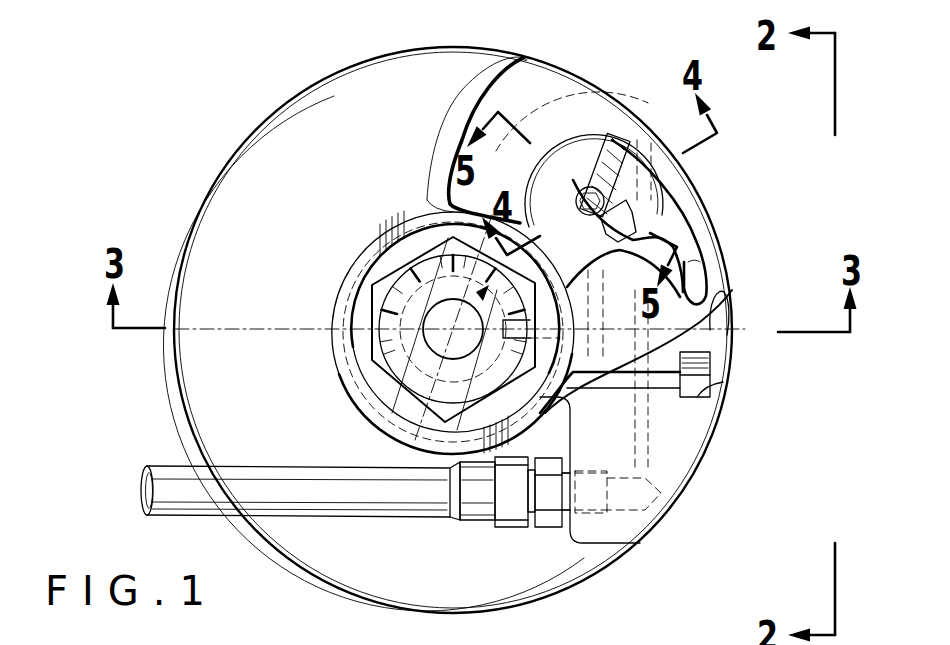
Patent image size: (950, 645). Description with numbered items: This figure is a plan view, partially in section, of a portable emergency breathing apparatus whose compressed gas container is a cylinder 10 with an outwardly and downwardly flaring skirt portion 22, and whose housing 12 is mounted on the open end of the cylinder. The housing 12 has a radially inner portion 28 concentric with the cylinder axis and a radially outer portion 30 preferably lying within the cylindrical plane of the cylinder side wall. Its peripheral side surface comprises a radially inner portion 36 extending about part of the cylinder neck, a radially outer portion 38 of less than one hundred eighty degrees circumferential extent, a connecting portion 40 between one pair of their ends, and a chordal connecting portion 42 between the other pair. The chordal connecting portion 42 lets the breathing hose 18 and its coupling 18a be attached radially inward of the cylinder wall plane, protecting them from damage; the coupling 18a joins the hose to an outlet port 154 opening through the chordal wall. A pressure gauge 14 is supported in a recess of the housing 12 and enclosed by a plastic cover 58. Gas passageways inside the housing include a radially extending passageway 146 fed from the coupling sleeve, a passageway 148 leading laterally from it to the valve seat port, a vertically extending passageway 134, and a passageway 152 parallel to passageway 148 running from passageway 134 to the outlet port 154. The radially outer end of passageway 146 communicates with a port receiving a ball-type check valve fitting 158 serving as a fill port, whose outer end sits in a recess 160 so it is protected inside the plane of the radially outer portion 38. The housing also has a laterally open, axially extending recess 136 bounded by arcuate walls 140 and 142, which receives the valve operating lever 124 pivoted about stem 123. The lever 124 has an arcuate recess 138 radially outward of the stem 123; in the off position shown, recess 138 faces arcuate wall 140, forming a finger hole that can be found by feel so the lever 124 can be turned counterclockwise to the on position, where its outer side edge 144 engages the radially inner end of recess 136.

The cylinder 10 is at (182, 125).
The housing 12 is at (592, 69).
The pressure gauge 14 is at (377, 285).
The breathing hose 18 is at (397, 526).
The coupling 18a is at (540, 522).
The skirt portion 22 is at (293, 127).
The radially inner portion 28 is at (326, 293).
The radially outer portion 30 is at (716, 192).
The radially inner portion of peripheral side surface 36 is at (335, 353).
The radially outer portion of peripheral side surface 38 is at (710, 213).
The connecting portion 40 is at (453, 120).
The chordal connecting portion 42 is at (605, 547).
The plastic cover 58 is at (388, 358).
The stem 123 is at (585, 201).
The operating lever 124 is at (700, 277).
The passageway 134 is at (677, 190).
The recess 136 is at (547, 73).
The arcuate recess 138 is at (700, 263).
The arcuate wall 140 is at (710, 304).
The arcuate wall 142 is at (508, 67).
The outer side edge 144 is at (686, 253).
The radially extending passageway 146 is at (425, 372).
The passageway 148 is at (540, 237).
The passageway 152 is at (650, 443).
The outlet port 154 is at (650, 510).
The check valve fitting 158 is at (733, 350).
The recess 160 is at (700, 398).